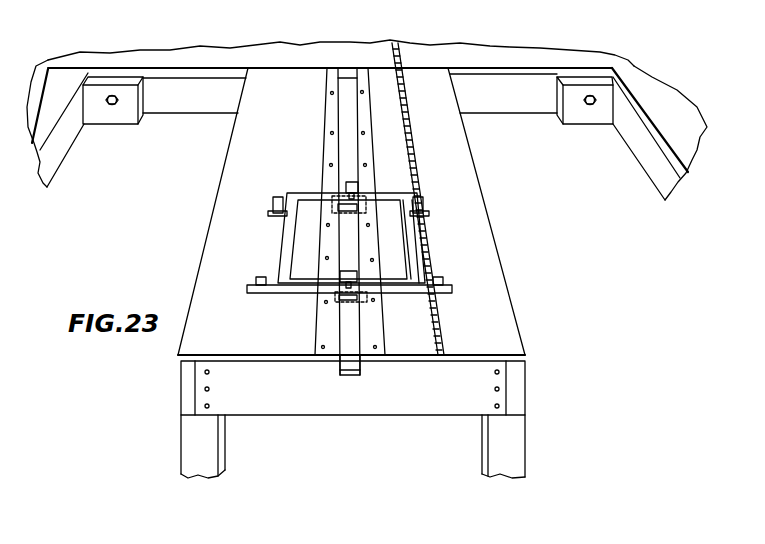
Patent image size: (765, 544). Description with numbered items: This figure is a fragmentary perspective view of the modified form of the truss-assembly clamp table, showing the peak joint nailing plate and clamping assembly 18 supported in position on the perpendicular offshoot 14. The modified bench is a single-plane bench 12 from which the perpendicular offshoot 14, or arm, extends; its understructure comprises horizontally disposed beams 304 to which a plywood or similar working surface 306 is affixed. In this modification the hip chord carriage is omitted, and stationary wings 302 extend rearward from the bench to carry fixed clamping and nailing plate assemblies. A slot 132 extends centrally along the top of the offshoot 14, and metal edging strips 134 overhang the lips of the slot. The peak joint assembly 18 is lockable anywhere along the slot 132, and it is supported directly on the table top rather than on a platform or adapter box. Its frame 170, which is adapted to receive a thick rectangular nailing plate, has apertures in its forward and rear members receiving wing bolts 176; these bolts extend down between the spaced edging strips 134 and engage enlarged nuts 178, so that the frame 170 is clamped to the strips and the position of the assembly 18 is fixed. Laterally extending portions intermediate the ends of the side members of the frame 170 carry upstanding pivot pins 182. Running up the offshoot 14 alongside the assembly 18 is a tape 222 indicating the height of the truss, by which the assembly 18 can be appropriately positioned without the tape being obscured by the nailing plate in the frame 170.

The working surface 306 is at (302, 53).
The stationary wing 302 is at (53, 148).
The single-plane bench 12 is at (506, 90).
The perpendicular offshoot 14 is at (501, 265).
The beam 304 is at (353, 385).
The slot 132 is at (348, 80).
The metal edging strip 134 is at (358, 97).
The tape 222 is at (398, 90).
The peak joint nailing plate and clamping assembly 18 is at (282, 257).
The peak joint assembly frame 170 is at (410, 245).
The pivot pin 182 is at (277, 197).
The wing bolt 176 is at (347, 185).
The nut 178 is at (340, 208).